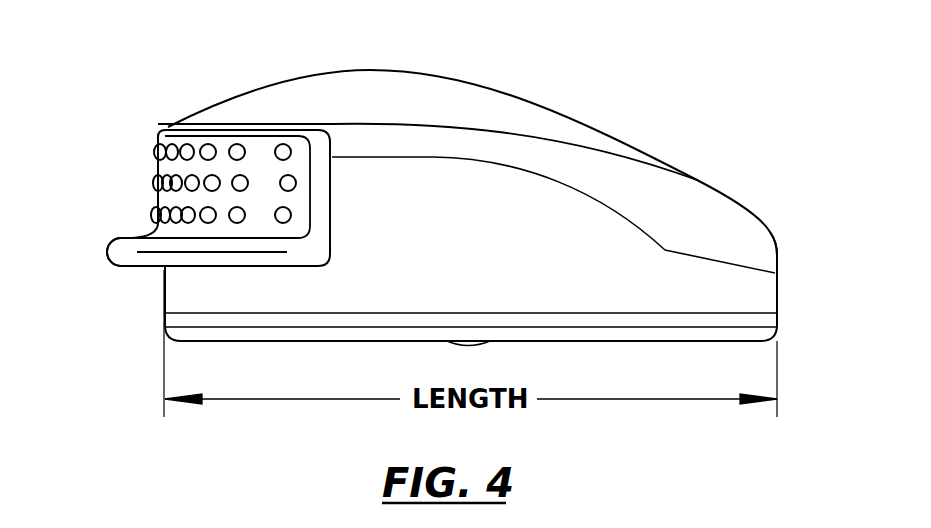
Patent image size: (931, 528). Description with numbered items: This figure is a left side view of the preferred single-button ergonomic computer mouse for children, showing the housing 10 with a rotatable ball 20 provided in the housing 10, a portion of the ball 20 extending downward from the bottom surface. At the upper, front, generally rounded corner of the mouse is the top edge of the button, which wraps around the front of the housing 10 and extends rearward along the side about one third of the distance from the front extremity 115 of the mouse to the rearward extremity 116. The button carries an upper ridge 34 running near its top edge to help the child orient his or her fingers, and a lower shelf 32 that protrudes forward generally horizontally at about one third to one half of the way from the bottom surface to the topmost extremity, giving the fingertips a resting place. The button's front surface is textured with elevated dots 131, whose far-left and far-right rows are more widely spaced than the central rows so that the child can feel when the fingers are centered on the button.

The housing 10 is at (595, 63).
The rotatable ball 20 is at (467, 345).
The lower shelf 32 is at (133, 238).
The upper ridge 34 is at (168, 128).
The front extremity 115 is at (108, 255).
The rearward extremity 116 is at (777, 285).
The elevated dots 131 is at (283, 144).